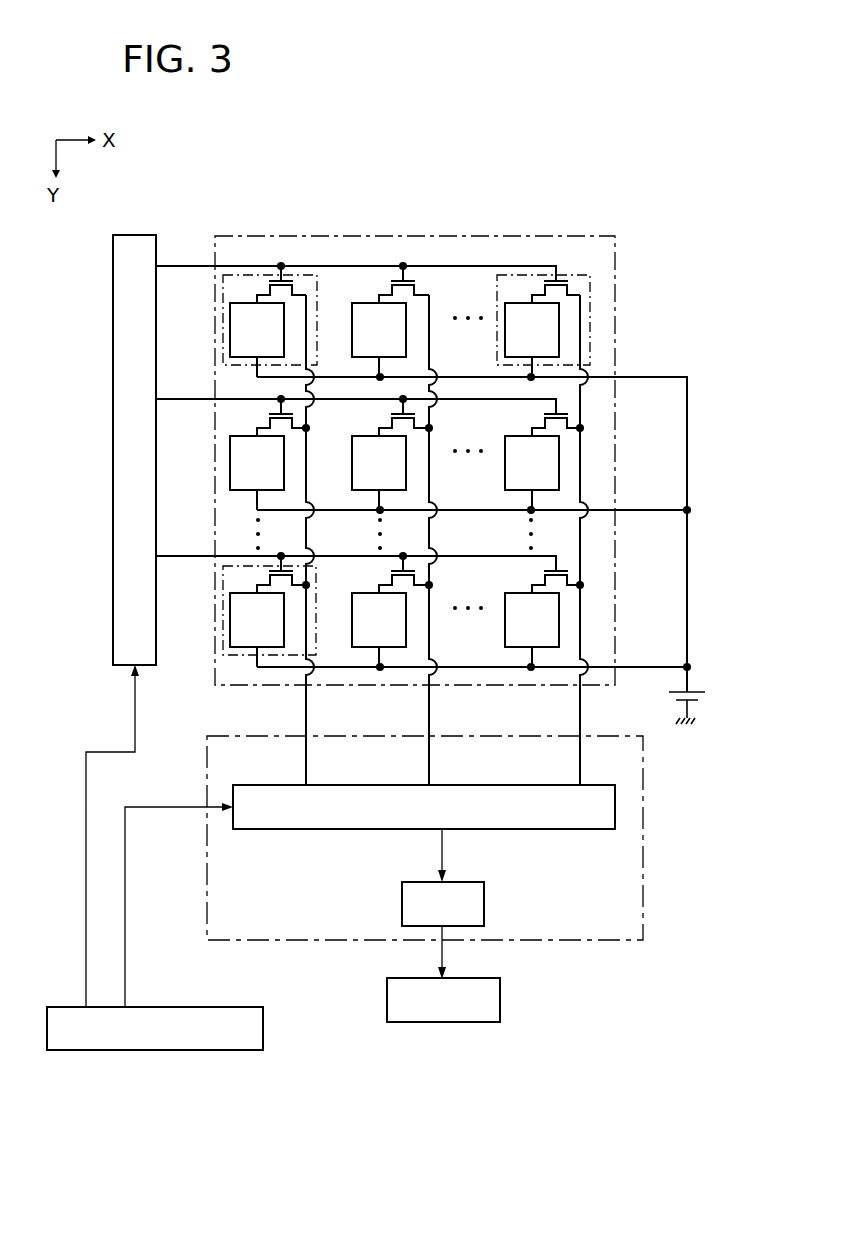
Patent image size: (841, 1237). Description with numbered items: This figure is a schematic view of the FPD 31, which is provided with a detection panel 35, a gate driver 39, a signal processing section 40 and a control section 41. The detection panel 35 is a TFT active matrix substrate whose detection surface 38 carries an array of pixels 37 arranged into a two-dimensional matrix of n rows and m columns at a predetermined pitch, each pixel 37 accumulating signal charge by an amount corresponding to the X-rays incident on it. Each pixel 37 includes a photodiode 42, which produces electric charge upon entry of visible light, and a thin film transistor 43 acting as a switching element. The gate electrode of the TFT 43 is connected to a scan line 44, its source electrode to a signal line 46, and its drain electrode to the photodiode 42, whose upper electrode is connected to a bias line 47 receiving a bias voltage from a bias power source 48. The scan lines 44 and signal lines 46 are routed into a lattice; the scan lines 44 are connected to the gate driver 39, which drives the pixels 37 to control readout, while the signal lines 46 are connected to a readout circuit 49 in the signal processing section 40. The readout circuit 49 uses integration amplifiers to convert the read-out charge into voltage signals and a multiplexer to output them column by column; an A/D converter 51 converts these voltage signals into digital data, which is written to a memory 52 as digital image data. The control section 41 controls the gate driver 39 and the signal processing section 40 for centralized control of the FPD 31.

The FPD 31 is at (199, 165).
The detection panel 35 is at (463, 206).
The pixel 37 is at (303, 275).
The detection surface 38 is at (541, 236).
The gate driver 39 is at (137, 235).
The signal processing section 40 is at (644, 804).
The control section 41 is at (185, 1007).
The photodiode 42 is at (285, 318).
The thin film transistor 43 is at (275, 280).
The scan line 44 is at (196, 266).
The signal line 46 is at (305, 704).
The bias line 47 is at (650, 377).
The bias power source 48 is at (700, 692).
The readout circuit 49 is at (599, 830).
The A/D converter 51 is at (486, 902).
The memory 52 is at (501, 1000).